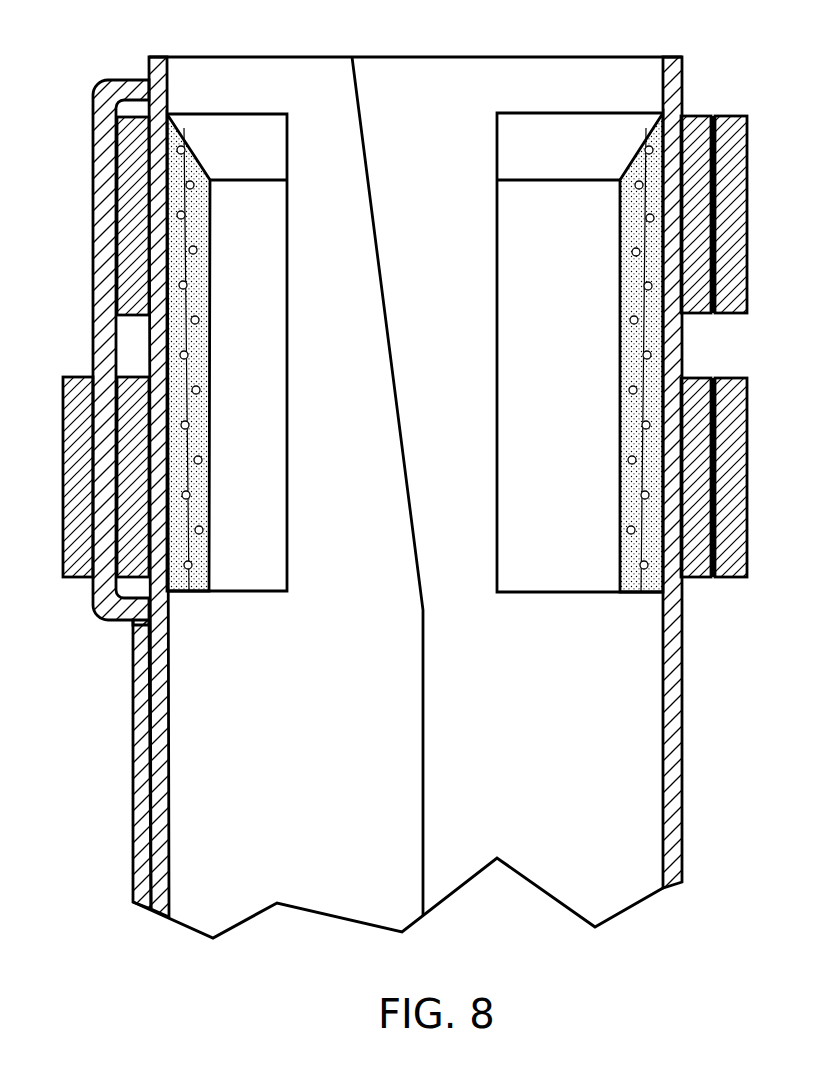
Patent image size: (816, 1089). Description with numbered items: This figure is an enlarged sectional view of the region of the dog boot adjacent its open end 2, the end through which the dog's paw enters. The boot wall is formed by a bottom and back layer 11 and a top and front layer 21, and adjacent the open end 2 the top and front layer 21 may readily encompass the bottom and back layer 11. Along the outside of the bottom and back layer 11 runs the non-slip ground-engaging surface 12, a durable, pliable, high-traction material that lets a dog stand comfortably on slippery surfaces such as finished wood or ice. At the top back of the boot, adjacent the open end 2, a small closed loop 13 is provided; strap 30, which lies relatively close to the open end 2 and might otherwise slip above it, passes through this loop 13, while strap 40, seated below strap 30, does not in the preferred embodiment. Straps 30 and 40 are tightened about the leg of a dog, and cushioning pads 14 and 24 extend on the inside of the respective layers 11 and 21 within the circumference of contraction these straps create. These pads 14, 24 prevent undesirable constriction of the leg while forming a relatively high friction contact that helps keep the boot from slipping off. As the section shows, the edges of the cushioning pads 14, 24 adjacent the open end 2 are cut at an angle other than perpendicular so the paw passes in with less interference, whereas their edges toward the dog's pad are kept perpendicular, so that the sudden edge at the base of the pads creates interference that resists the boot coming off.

The open end 2 is at (415, 57).
The bottom and back layer 11 is at (153, 67).
The non-slip ground-engaging surface 12 is at (140, 723).
The closed loop 13 is at (103, 150).
The cushioning pad 14 is at (274, 256).
The top and front layer 21 is at (677, 758).
The cushioning pad 24 is at (571, 277).
The strap 30 is at (125, 243).
The strap 40 is at (70, 377).